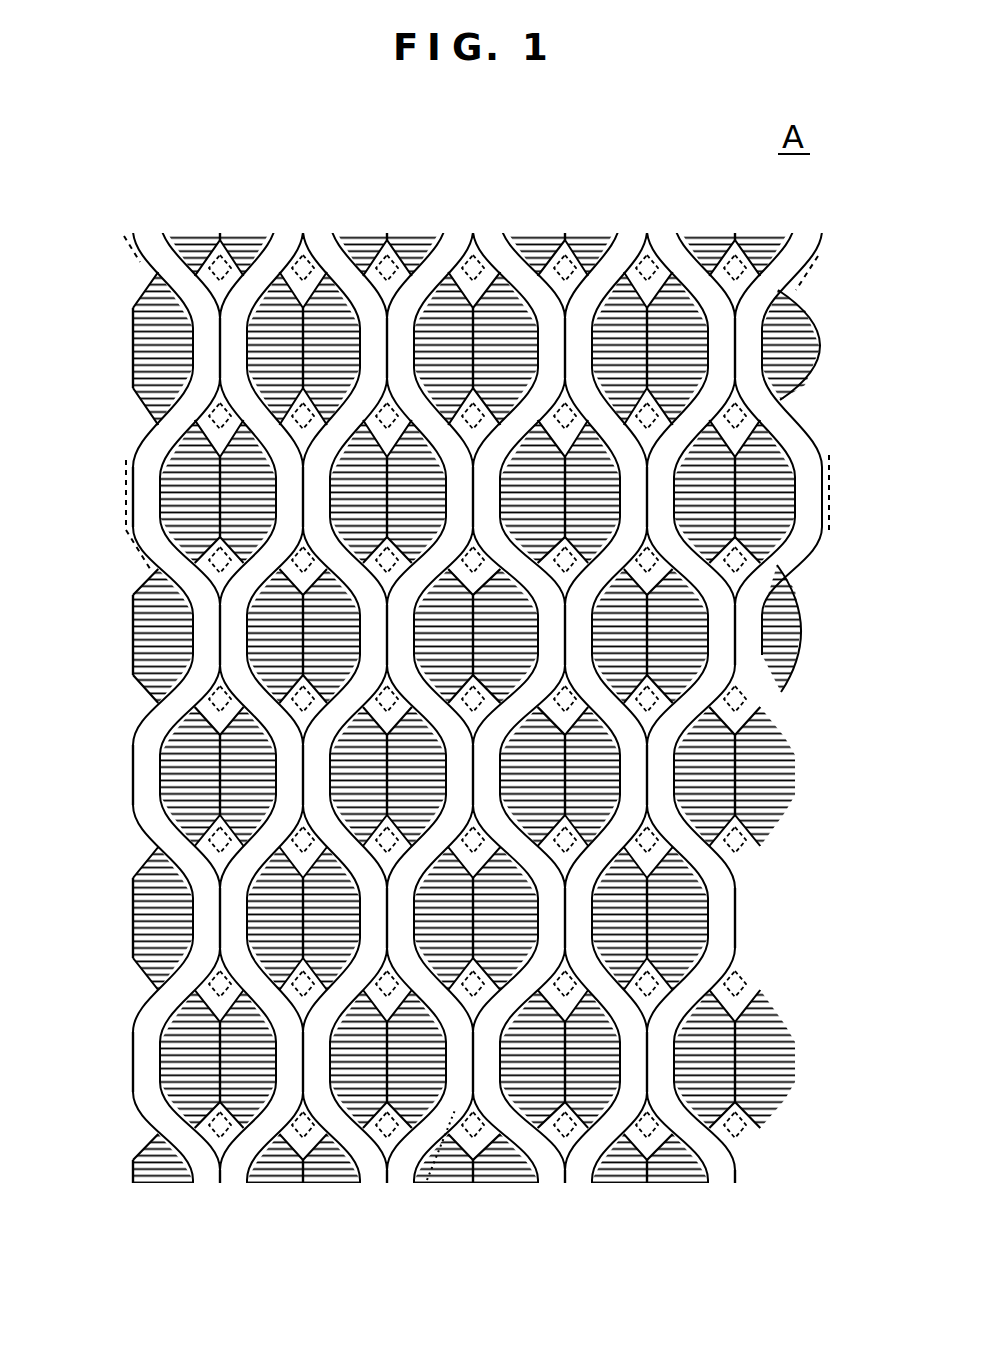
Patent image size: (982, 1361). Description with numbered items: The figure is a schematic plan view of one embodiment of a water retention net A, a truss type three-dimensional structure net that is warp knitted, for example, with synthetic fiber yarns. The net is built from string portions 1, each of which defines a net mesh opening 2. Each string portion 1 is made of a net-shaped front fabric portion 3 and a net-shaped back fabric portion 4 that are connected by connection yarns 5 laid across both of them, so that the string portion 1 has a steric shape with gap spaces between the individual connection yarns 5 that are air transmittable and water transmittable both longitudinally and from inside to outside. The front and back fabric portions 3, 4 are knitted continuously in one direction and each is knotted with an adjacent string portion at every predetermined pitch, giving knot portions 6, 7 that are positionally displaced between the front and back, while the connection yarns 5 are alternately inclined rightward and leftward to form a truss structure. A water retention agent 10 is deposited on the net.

The string portion 1 is at (492, 237).
The net mesh opening 2 is at (215, 708).
The front fabric portion 3 is at (722, 392).
The back fabric portion 4 is at (427, 1180).
The connection yarns 5 is at (270, 936).
The knot portion 6 is at (205, 647).
The knot portion 7 is at (167, 503).
The water retention agent 10 is at (818, 443).